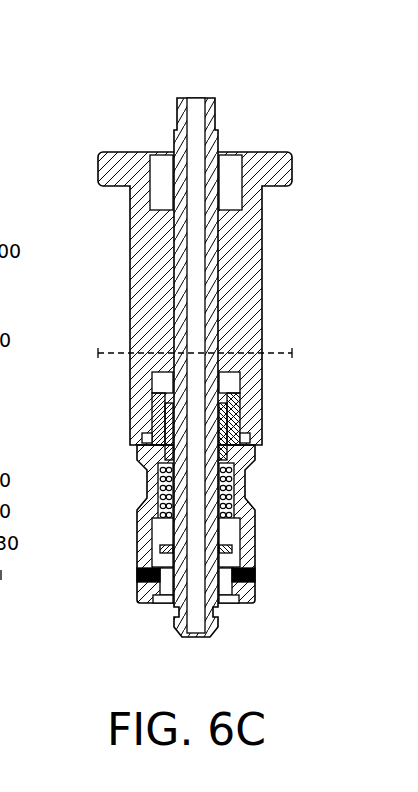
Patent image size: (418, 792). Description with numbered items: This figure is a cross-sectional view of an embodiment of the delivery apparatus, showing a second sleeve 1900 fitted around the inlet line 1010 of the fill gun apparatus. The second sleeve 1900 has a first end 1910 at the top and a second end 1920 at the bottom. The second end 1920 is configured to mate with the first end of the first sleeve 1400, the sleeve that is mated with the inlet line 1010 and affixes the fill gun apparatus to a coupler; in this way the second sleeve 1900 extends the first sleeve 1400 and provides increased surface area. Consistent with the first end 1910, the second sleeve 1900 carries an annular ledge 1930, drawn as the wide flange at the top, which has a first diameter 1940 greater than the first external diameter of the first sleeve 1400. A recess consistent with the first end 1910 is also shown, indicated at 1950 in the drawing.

The inlet line 1010 is at (213, 87).
The first end 1910 is at (100, 132).
The annular ledge 1930 is at (95, 167).
The sleeve 1900 is at (100, 228).
The cavity 1950 is at (162, 160).
The first diameter 1940 is at (117, 347).
The second end 1920 is at (102, 472).
The sleeve 1400 is at (102, 573).